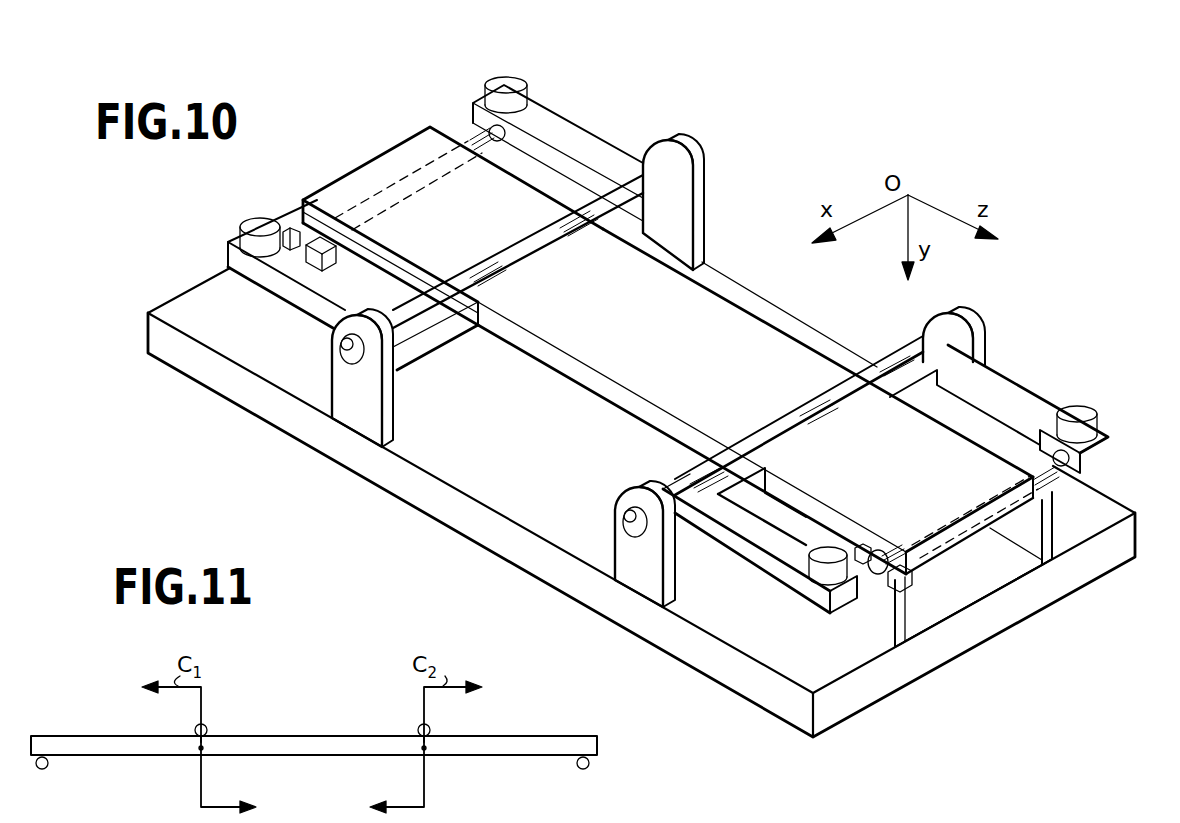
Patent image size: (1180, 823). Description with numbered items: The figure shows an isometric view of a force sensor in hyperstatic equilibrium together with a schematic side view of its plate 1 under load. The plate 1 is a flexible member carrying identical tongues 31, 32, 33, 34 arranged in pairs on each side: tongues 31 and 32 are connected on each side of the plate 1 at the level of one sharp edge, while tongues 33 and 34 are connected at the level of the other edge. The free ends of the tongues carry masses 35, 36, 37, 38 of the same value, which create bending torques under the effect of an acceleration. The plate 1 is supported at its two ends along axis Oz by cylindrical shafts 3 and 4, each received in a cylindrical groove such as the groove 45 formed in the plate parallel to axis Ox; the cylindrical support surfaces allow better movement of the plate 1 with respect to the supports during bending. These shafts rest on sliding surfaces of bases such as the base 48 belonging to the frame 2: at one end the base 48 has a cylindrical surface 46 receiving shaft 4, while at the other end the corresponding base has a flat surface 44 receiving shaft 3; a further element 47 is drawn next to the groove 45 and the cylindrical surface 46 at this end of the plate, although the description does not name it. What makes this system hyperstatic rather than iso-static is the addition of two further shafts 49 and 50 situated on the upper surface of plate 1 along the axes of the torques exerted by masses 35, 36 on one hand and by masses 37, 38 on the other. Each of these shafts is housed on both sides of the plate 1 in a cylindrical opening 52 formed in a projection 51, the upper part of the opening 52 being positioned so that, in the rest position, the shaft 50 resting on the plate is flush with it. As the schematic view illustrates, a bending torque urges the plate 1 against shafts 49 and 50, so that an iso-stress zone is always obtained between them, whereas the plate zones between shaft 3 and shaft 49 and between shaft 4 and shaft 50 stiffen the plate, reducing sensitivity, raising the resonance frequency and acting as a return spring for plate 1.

In FIG. 10, the plate 1 is at (770, 325).
In FIG. 11, the plate 1 is at (305, 738).
In FIG. 10, the frame 2 is at (422, 490).
In FIG. 10, the shaft 3 is at (472, 132).
In FIG. 11, the shaft 3 is at (44, 770).
In FIG. 10, the shaft 4 is at (1062, 468).
In FIG. 11, the shaft 4 is at (583, 770).
In FIG. 10, the tongue 31 is at (598, 150).
In FIG. 10, the tongue 32 is at (290, 292).
In FIG. 10, the tongue 33 is at (990, 380).
In FIG. 10, the tongue 34 is at (772, 555).
In FIG. 10, the mass 35 is at (528, 88).
In FIG. 10, the mass 36 is at (250, 218).
In FIG. 10, the mass 37 is at (1070, 404).
In FIG. 10, the mass 38 is at (828, 546).
In FIG. 10, the flat surface 44 is at (320, 272).
In FIG. 10, the cylindrical groove 45 is at (906, 530).
In FIG. 10, the cylindrical surface 46 is at (905, 590).
In FIG. 10, the block 47 is at (862, 544).
In FIG. 10, the base 48 is at (1038, 604).
In FIG. 10, the shaft 49 is at (288, 228).
In FIG. 11, the shaft 49 is at (197, 726).
In FIG. 10, the shaft 50 is at (800, 412).
In FIG. 11, the shaft 50 is at (430, 728).
In FIG. 10, the projection 51 is at (614, 548).
In FIG. 10, the cylindrical opening 52 is at (642, 538).